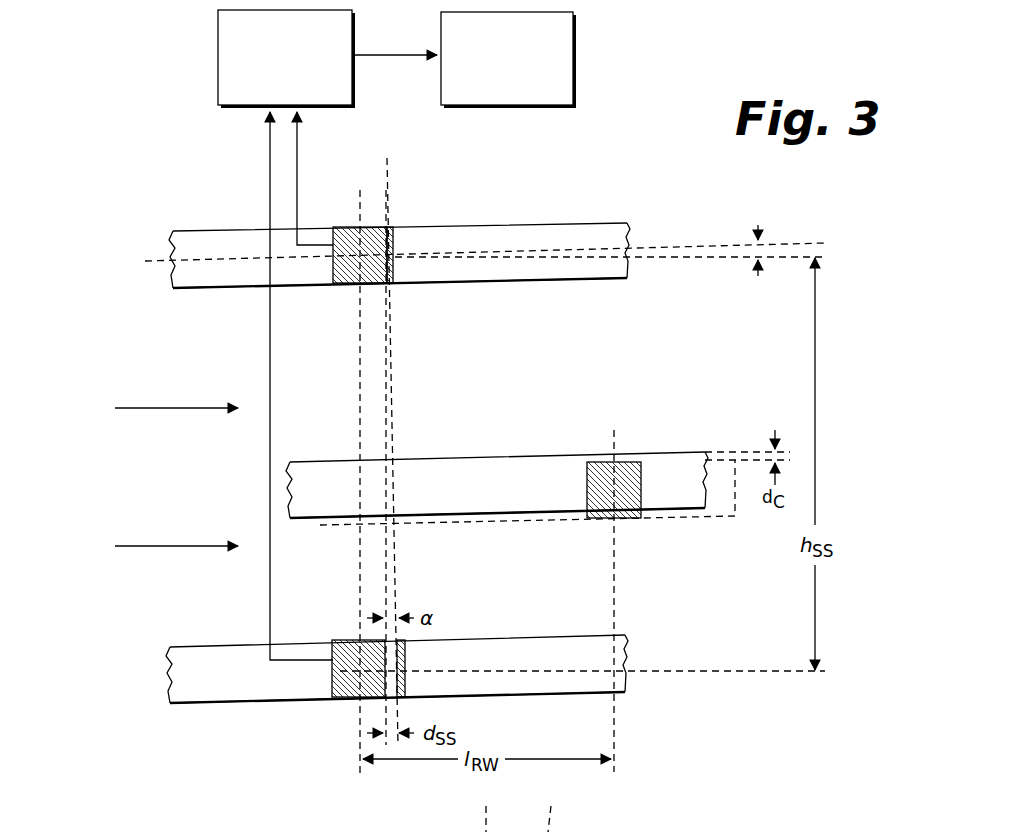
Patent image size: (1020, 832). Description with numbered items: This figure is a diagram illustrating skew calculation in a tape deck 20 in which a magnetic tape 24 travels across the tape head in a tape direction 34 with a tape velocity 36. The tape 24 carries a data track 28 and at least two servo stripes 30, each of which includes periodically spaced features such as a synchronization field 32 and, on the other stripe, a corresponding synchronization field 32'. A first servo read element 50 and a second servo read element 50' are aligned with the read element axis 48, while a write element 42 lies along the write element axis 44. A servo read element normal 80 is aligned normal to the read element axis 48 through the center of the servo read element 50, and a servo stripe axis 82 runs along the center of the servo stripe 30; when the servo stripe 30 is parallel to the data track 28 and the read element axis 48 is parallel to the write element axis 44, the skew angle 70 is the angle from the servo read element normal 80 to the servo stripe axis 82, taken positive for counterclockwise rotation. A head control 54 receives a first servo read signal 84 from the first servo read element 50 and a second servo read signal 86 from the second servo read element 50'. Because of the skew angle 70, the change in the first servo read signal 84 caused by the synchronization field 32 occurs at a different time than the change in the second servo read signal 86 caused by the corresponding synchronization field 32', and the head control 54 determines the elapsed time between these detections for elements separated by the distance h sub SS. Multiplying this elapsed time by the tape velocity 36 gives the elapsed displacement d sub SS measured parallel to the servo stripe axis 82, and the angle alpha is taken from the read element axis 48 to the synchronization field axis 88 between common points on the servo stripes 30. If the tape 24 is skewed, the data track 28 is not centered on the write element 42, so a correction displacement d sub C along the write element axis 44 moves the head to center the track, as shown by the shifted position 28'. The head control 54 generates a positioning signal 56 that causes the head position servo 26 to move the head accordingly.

The tape deck 20 is at (126, 172).
The magnetic tape 24 is at (607, 143).
The head position servo 26 is at (573, 55).
The data track 28 is at (497, 467).
The centered data track position 28' is at (555, 503).
The servo stripe 30 is at (500, 226).
The synchronization field 32 is at (415, 236).
The corresponding synchronization field 32' is at (433, 682).
The tape direction 34 is at (180, 410).
The tape velocity 36 is at (182, 549).
The write element 42 is at (625, 462).
The write element axis 44 is at (614, 728).
The read element axis 48 is at (357, 770).
The servo read element 50 is at (342, 271).
The second servo read element 50' is at (331, 689).
The head control 54 is at (218, 51).
The positioning signal 56 is at (373, 57).
The skew angle 70 is at (755, 252).
The servo read element normal 80 is at (685, 258).
The servo stripe axis 82 is at (780, 243).
The first servo read signal 84 is at (300, 146).
The second servo read signal 86 is at (265, 143).
The synchronization field axis 88 is at (398, 580).